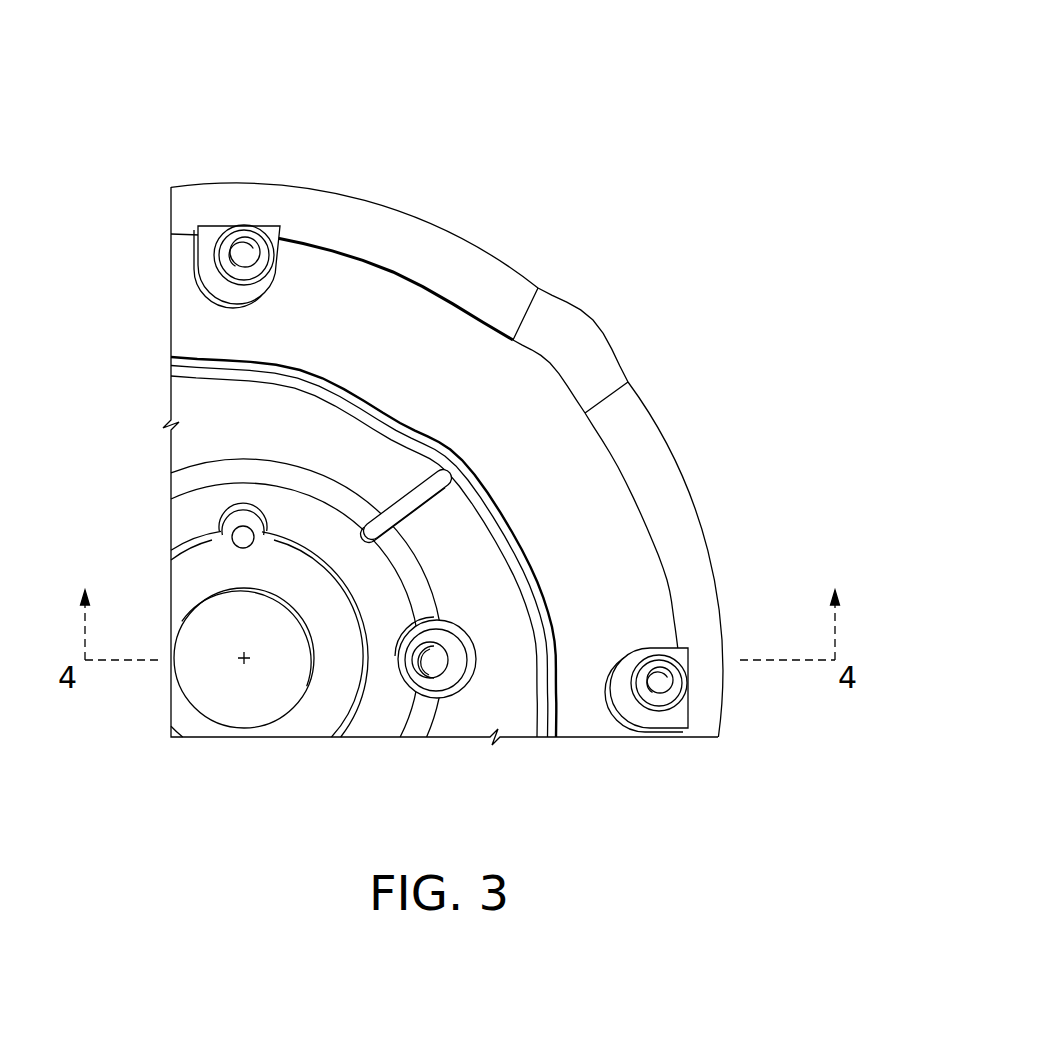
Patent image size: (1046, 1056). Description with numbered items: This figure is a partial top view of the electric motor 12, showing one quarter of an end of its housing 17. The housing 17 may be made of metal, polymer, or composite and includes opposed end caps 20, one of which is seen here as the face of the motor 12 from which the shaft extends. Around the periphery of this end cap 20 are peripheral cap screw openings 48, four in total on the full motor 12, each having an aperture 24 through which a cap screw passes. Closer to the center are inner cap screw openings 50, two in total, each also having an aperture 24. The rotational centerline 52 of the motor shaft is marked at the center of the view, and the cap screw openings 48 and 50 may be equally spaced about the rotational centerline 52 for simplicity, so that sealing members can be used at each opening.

The motor 12 is at (568, 72).
The housing 17 is at (568, 182).
The end caps 20 is at (600, 325).
The aperture 24 is at (281, 166).
The peripheral cap screw openings 48 is at (236, 168).
The inner cap screw openings 50 is at (455, 617).
The rotational centerline 52 is at (243, 662).